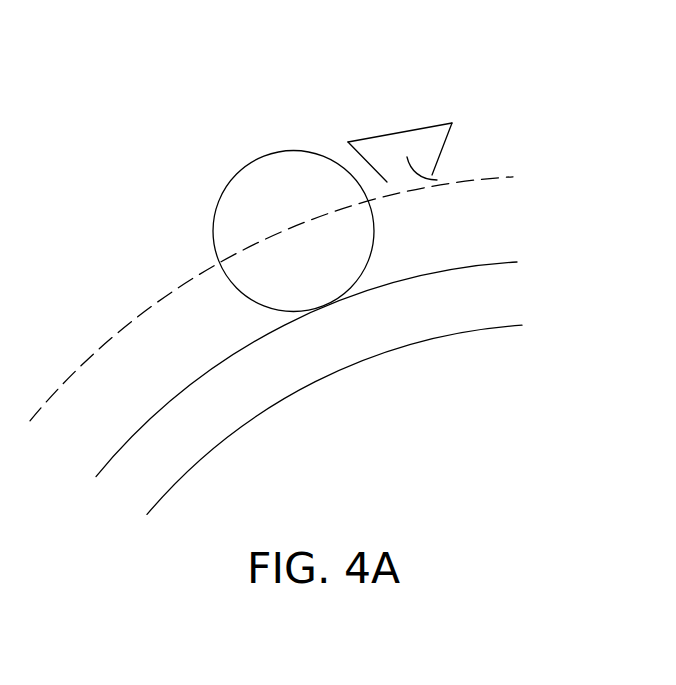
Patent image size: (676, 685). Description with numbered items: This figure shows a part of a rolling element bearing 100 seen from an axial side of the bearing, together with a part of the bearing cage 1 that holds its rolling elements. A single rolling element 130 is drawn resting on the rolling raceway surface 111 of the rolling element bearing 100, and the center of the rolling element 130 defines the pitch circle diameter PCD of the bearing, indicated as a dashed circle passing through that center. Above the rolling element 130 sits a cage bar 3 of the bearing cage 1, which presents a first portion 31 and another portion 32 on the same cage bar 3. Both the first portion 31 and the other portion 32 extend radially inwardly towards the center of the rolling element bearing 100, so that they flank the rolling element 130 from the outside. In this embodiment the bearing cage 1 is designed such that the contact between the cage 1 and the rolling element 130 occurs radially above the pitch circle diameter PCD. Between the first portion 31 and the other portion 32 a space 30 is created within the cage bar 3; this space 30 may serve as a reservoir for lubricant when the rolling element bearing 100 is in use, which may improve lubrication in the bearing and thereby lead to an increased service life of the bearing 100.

The bearing cage 1 is at (377, 105).
The cage bar 3 is at (400, 128).
The space 30 is at (437, 180).
The first portion 31 is at (367, 163).
The another portion 32 is at (447, 146).
The rolling element bearing 100 is at (395, 323).
The rolling raceway surface 111 is at (147, 422).
The rolling element 130 is at (222, 191).
The pitch circle diameter PCD is at (167, 297).